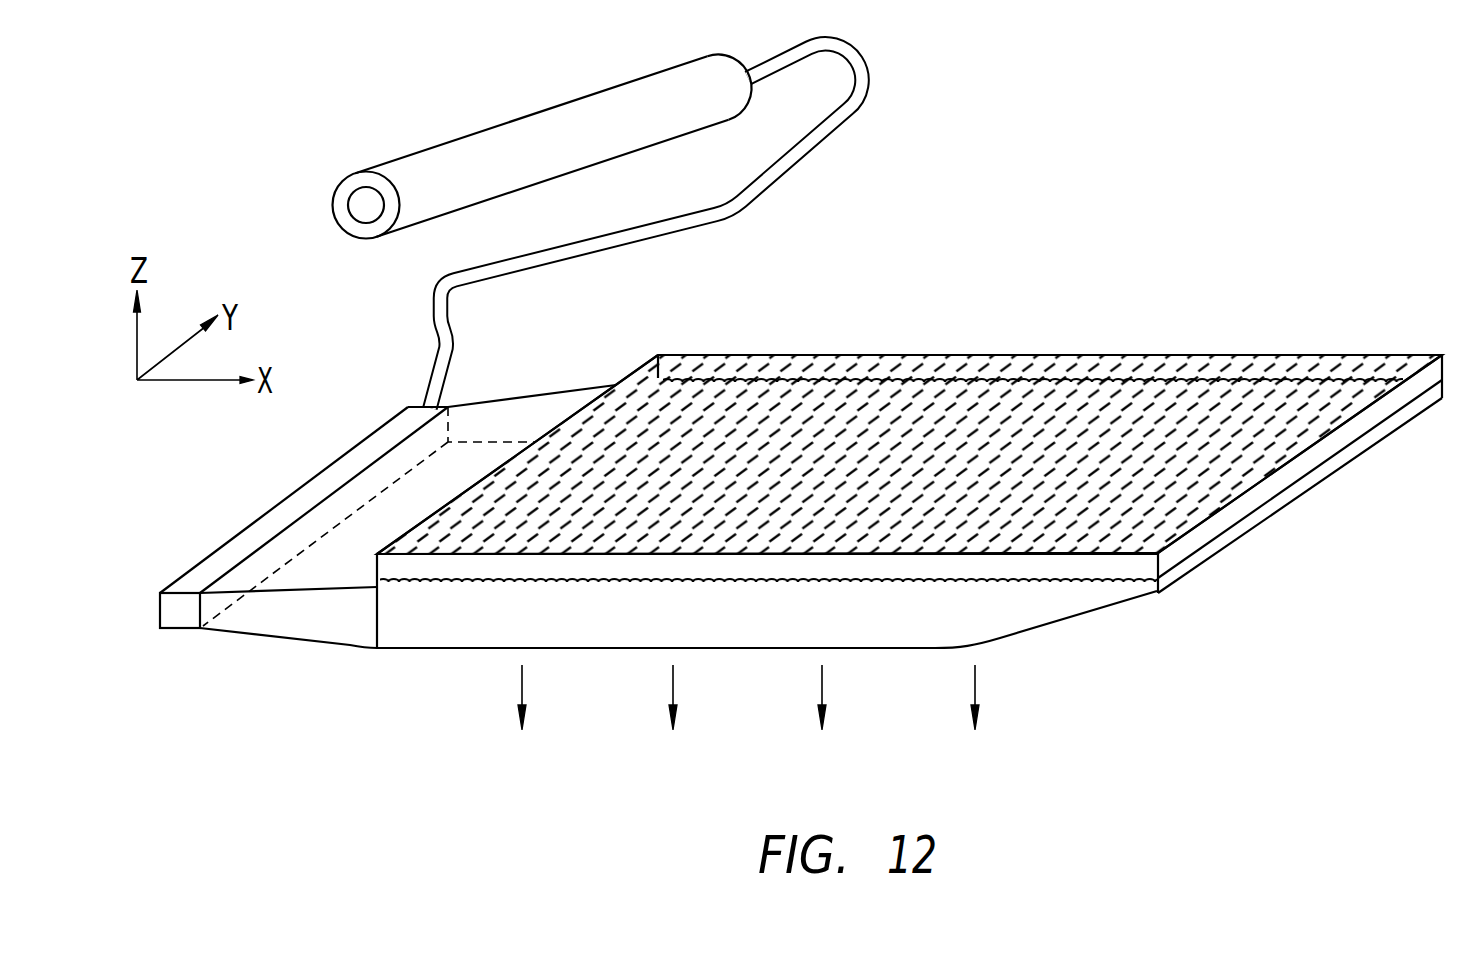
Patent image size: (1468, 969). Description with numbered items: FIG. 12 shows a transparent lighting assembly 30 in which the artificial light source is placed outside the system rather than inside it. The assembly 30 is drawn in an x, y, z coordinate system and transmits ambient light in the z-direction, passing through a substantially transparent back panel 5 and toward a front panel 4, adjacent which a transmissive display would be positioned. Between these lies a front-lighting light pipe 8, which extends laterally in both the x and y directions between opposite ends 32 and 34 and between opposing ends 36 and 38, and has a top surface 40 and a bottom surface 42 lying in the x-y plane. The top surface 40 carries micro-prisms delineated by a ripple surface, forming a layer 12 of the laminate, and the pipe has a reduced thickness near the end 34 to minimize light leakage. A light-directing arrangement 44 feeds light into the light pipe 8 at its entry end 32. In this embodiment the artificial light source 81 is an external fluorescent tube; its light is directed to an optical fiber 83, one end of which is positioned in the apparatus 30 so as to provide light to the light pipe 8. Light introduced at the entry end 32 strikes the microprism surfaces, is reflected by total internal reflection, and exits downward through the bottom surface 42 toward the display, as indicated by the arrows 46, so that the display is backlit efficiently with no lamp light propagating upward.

The front panel 4 is at (787, 648).
The substantially transparent back panel 5 is at (877, 355).
The front-lighting light pipe 8 is at (1270, 507).
The abrasive layer 12 is at (1323, 453).
The assembly 30 is at (918, 500).
The entry end 32 is at (377, 621).
The opposite end 34 is at (1157, 591).
The opposing end 36 is at (1170, 588).
The opposing end 38 is at (1438, 396).
The top surface 40 is at (391, 648).
The bottom surface 42 is at (483, 581).
The light-directing arrangement 44 is at (362, 527).
The arrows 46 is at (522, 695).
The artificial light source 81 is at (608, 89).
The optical fiber 83 is at (863, 94).